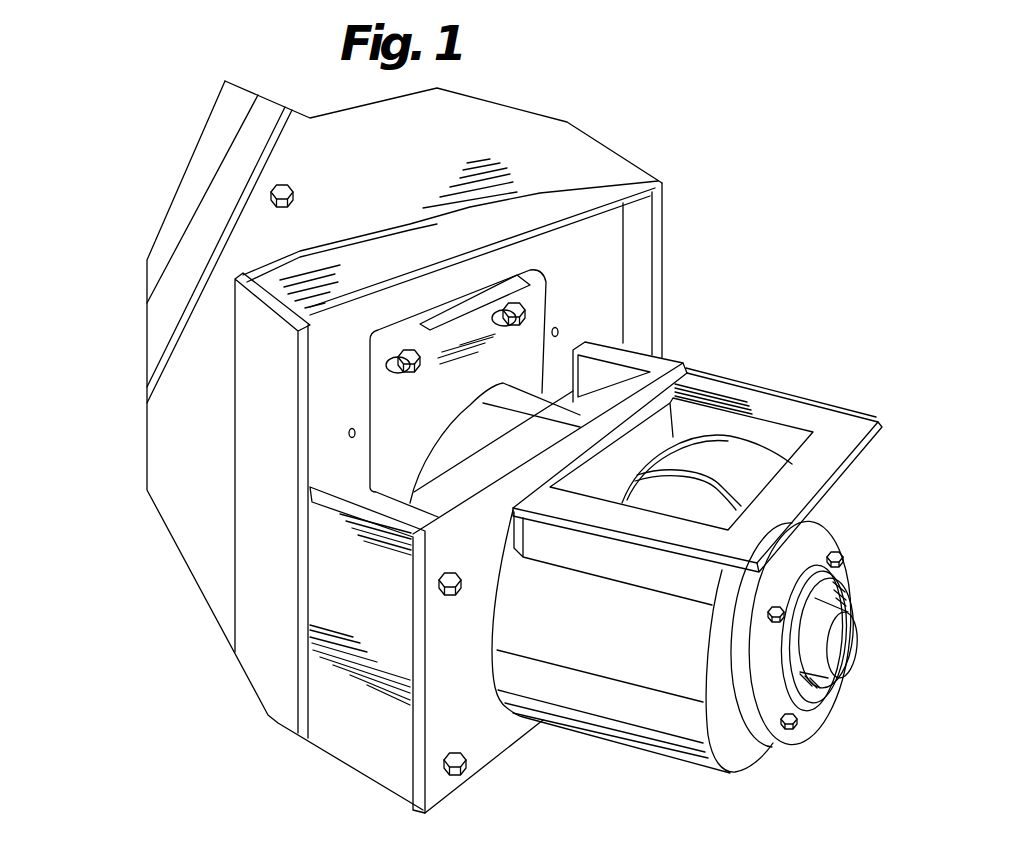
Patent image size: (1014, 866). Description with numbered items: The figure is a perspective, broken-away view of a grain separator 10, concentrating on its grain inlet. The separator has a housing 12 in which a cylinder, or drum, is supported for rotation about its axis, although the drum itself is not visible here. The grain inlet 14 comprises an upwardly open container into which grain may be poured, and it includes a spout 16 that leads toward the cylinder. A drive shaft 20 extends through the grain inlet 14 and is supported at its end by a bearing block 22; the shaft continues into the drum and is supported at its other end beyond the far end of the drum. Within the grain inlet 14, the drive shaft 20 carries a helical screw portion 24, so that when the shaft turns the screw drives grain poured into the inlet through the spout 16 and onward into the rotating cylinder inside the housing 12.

The grain separator 10 is at (689, 278).
The housing 12 is at (573, 150).
The grain inlet 14 is at (807, 407).
The spout 16 is at (494, 454).
The drive shaft 20 is at (846, 643).
The bearing block 22 is at (810, 547).
The helical screw portion 24 is at (702, 497).